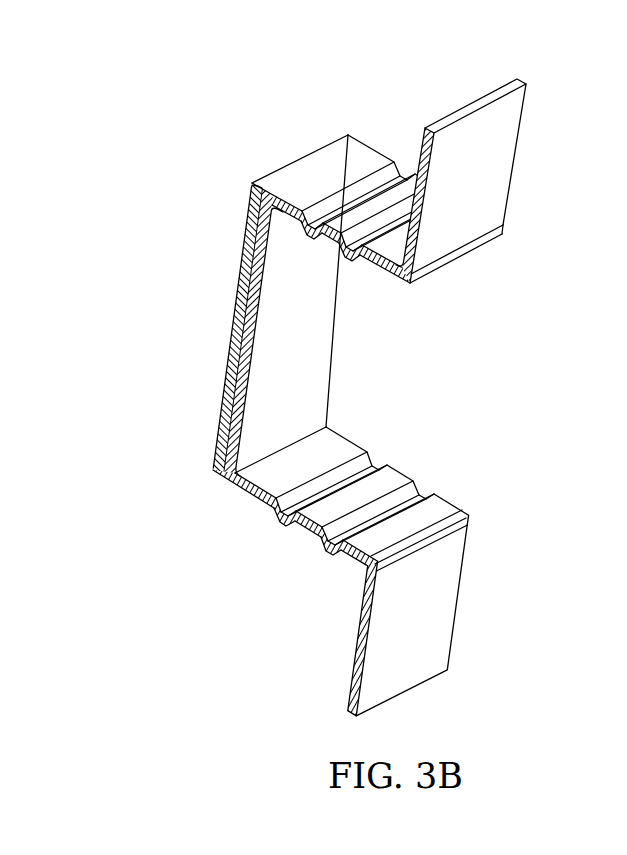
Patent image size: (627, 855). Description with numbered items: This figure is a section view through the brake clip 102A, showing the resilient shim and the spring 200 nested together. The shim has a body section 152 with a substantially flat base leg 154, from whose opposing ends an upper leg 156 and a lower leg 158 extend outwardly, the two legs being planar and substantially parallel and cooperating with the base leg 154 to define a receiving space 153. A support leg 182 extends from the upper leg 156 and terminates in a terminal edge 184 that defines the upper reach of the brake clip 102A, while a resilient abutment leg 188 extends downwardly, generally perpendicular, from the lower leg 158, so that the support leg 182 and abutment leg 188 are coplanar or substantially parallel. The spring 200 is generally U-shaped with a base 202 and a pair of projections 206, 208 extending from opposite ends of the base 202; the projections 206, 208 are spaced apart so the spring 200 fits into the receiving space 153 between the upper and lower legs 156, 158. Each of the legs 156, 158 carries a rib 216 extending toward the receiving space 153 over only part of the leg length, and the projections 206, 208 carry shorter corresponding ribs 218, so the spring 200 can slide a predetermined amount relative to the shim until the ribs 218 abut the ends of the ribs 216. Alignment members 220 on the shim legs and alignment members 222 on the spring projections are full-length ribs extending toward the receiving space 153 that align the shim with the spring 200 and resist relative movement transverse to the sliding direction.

The brake clip 102A is at (220, 84).
The body section 152 is at (188, 489).
The receiving space 153 is at (319, 372).
The base leg 154 is at (235, 312).
The upper leg 156 is at (317, 168).
The lower leg 158 is at (243, 497).
The support leg 182 is at (492, 152).
The terminal edge 184 is at (477, 110).
The resilient abutment leg 188 is at (443, 603).
The spring 200 is at (351, 401).
The base 202 is at (323, 347).
The projection 206 is at (452, 257).
The projection 208 is at (448, 505).
The rib 216 is at (378, 177).
The rib 218 is at (308, 230).
The alignment member 220 is at (412, 170).
The alignment member 222 is at (350, 252).